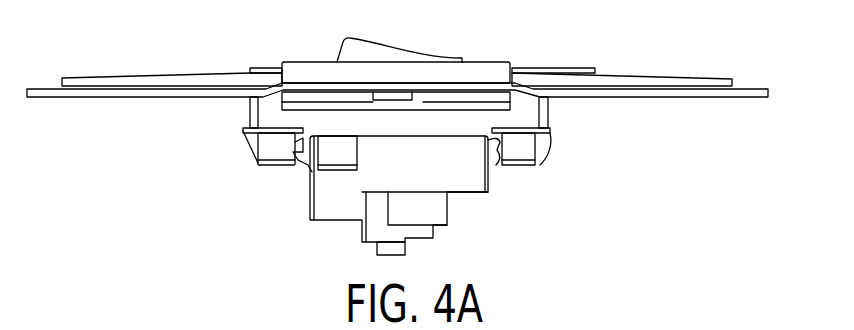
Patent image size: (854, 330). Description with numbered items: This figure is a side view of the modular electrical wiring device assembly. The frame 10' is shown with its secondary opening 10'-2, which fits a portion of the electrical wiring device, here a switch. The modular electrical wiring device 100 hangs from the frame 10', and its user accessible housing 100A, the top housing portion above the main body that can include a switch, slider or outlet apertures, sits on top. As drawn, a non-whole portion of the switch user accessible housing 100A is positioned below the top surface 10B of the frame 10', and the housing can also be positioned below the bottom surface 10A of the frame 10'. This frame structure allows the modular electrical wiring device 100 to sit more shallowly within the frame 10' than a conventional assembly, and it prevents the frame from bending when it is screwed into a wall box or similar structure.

The top surface of the frame 10B is at (220, 82).
The bottom surface of the frame 10A is at (662, 98).
The frame 10' is at (397, 127).
The secondary opening 10'-2 is at (567, 131).
The user accessible housing 100A is at (297, 75).
The modular electrical wiring device 100 is at (333, 190).